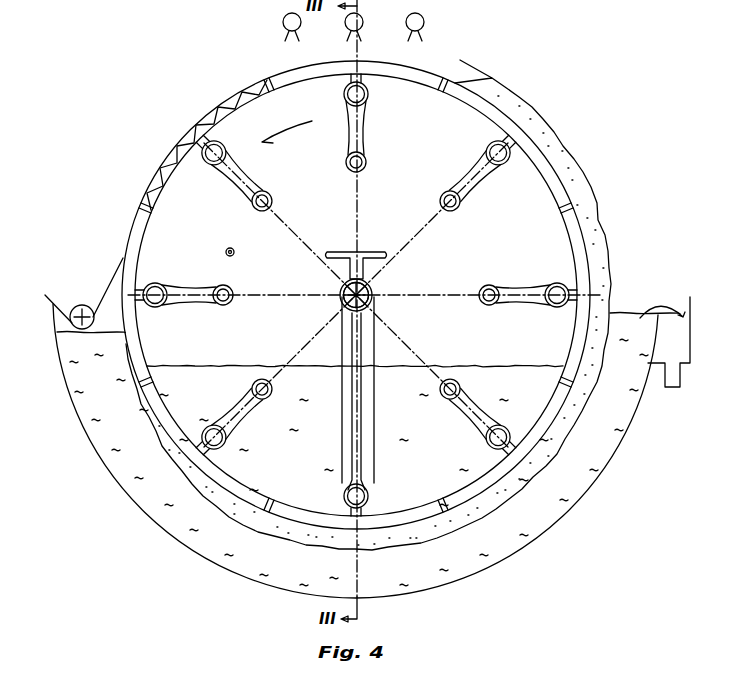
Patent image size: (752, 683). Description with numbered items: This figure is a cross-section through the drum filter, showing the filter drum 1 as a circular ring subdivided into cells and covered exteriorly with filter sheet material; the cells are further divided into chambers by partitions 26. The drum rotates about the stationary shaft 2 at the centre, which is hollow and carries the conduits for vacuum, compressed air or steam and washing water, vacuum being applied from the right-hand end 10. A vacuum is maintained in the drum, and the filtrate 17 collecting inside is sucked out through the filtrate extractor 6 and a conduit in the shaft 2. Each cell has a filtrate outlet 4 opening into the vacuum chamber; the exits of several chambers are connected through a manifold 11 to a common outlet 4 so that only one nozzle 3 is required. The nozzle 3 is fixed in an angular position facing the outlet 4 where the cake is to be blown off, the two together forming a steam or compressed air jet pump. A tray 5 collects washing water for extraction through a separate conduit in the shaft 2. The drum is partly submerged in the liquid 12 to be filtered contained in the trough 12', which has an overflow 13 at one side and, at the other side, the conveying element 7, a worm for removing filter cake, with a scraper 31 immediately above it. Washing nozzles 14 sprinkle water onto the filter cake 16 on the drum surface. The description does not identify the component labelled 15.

The filter drum 1 is at (117, 245).
The stationary shaft 2 is at (373, 292).
The nozzle 3 is at (226, 252).
The filtrate outlet 4 is at (364, 128).
The tray 5 is at (383, 252).
The filtrate extractor 6 is at (376, 340).
The conveying element 7 is at (89, 298).
The right-hand end 10 is at (340, 293).
The manifold 11 is at (368, 95).
The liquid to be filtered 12 is at (366, 451).
The trough 12' is at (114, 428).
The overflow 13 is at (685, 298).
The washing nozzle 14 is at (362, 20).
The screen segment 15 is at (225, 97).
The filter cake 16 is at (574, 174).
The filtrate 17 is at (299, 461).
The partitions 26 is at (566, 210).
The scraper 31 is at (110, 268).